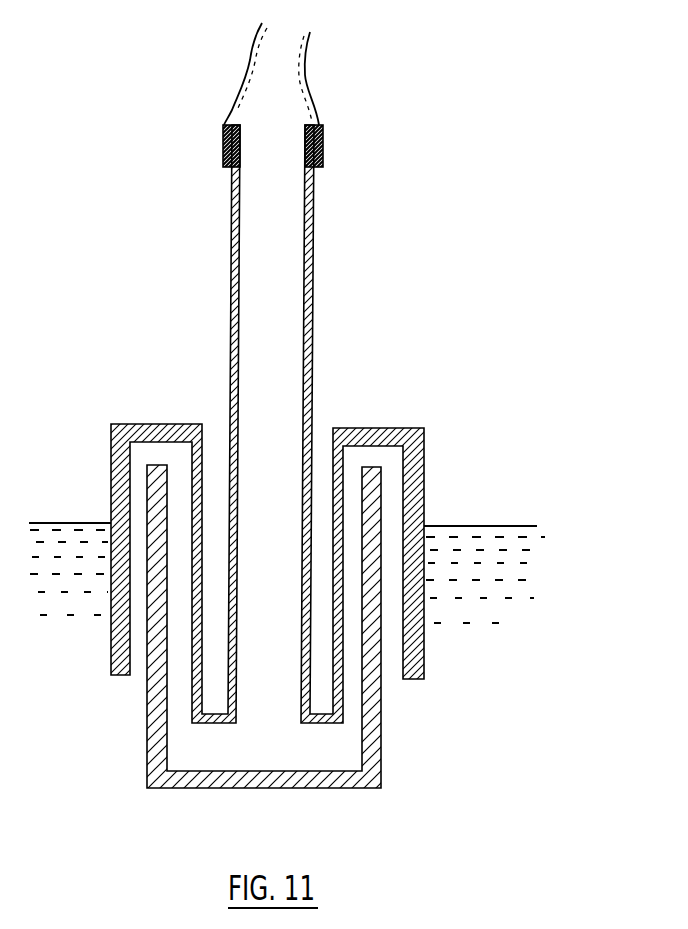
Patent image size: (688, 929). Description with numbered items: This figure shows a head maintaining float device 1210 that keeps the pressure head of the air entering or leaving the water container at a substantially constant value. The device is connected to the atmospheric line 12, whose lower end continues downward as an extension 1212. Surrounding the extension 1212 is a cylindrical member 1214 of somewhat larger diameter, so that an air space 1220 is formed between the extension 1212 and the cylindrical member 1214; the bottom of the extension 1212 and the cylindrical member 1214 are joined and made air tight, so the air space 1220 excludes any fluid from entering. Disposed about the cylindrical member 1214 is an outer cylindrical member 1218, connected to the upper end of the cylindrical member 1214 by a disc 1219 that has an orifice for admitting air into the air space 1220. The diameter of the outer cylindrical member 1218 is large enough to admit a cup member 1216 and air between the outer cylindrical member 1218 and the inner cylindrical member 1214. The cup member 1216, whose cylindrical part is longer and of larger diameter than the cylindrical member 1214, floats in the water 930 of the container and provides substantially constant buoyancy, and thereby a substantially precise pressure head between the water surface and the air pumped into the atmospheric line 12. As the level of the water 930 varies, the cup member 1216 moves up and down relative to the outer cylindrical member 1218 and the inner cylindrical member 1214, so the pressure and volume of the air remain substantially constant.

The atmospheric line 12 is at (307, 50).
The extension 1212 is at (313, 318).
The cylindrical member 1214 is at (193, 460).
The cup member 1216 is at (378, 758).
The outer cylindrical member 1218 is at (425, 545).
The disc 1219 is at (362, 428).
The air space 1220 is at (216, 437).
The head maintaining float device 1210 is at (510, 406).
The water 930 is at (450, 526).